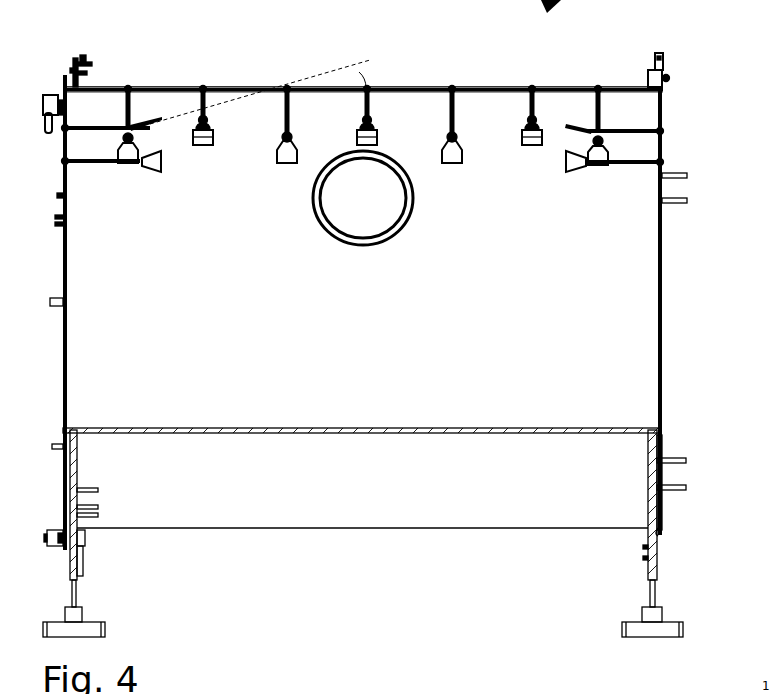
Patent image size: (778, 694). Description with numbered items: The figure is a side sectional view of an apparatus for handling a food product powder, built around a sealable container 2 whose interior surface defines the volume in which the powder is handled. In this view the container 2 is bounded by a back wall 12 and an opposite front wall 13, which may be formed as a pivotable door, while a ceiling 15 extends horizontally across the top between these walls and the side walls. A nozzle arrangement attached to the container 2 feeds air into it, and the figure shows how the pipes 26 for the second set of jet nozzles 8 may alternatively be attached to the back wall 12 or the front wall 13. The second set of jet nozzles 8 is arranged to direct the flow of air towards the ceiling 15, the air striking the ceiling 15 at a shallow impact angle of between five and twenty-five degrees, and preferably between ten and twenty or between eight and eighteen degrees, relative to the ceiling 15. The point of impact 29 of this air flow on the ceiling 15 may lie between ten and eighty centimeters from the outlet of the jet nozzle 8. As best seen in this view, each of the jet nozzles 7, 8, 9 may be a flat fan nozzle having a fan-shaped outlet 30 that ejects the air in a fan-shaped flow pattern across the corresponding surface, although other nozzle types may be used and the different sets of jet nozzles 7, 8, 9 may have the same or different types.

The sealable container 2 is at (550, 88).
The jet nozzle 7 is at (455, 130).
The second set of jet nozzles 8 is at (150, 120).
The jet nozzle 9 is at (210, 107).
The back wall 12 is at (67, 117).
The front wall 13 is at (666, 78).
The ceiling 15 is at (393, 88).
The pipes 26 is at (93, 127).
The point of impact 29 is at (282, 87).
The fan-shaped outlet 30 is at (378, 138).